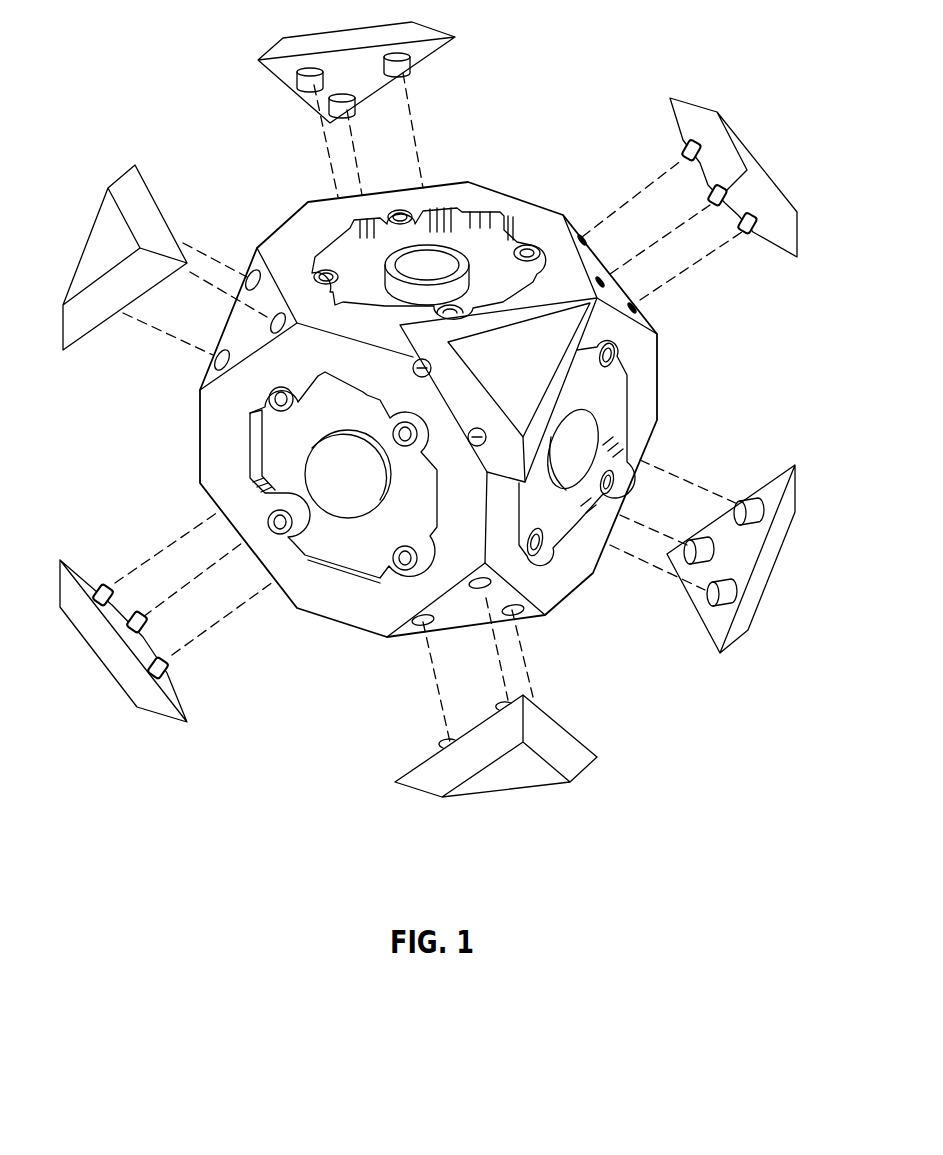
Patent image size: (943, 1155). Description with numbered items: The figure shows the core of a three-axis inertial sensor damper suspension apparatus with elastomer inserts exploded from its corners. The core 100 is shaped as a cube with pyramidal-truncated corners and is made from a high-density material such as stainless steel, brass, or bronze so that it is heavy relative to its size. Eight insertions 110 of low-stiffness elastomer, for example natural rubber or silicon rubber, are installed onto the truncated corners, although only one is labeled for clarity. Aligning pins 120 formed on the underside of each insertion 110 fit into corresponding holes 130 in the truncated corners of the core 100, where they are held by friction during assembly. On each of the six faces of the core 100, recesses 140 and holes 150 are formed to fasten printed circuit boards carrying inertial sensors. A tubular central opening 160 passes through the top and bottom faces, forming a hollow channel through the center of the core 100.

The core 100 is at (657, 398).
The insertion 110 is at (718, 135).
The aligning pin 120 is at (686, 143).
The hole 130 is at (578, 234).
The recess 140 is at (540, 517).
The hole 150 is at (270, 398).
The tubular central opening 160 is at (385, 238).